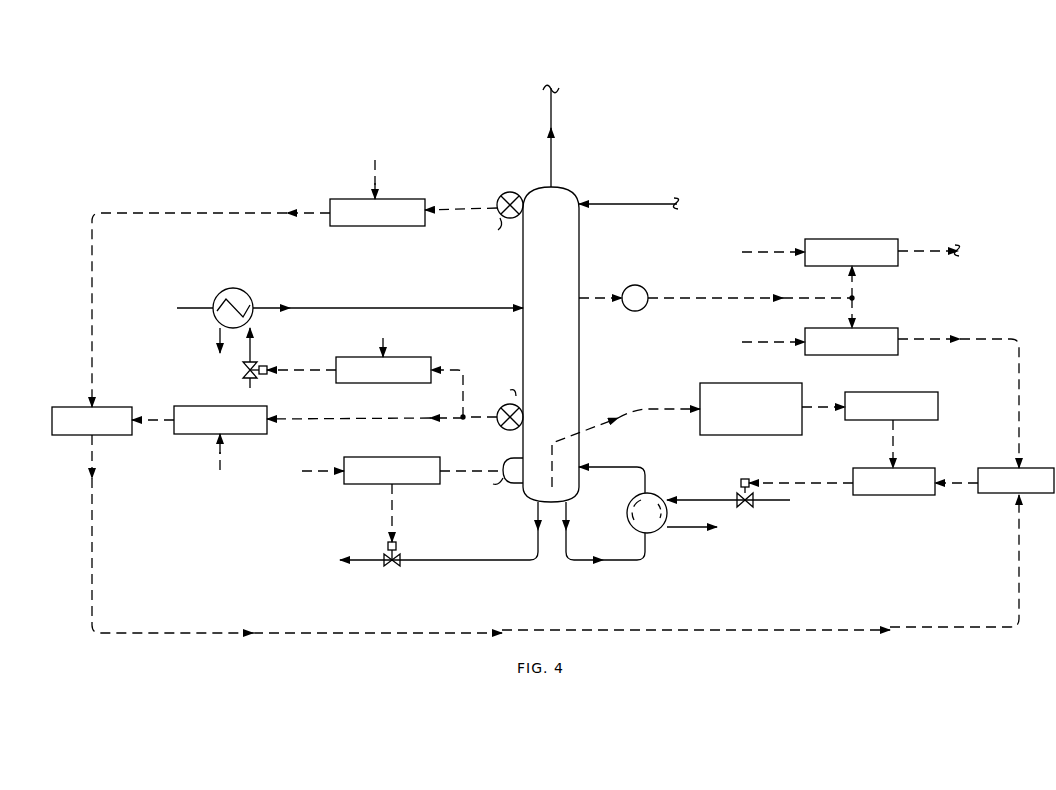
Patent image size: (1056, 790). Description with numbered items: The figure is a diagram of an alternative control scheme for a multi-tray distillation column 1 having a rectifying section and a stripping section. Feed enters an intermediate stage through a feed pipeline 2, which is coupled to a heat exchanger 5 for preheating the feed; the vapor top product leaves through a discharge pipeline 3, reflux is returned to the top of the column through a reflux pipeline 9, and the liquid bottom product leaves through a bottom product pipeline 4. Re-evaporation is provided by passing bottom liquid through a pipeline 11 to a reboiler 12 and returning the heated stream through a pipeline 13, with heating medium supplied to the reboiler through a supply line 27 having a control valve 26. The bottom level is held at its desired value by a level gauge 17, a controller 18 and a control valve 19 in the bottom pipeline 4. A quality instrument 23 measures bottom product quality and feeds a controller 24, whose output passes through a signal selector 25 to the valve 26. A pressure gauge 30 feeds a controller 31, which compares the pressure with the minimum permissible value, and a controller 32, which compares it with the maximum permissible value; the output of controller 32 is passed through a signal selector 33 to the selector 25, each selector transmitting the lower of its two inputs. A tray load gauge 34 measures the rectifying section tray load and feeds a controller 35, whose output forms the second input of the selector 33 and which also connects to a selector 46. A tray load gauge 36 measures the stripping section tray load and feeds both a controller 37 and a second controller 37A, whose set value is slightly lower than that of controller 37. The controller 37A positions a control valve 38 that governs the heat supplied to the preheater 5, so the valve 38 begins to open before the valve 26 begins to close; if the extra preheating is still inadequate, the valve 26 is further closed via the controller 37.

The distillation column 1 is at (557, 354).
The feed pipeline 2 is at (424, 308).
The top product discharge pipeline 3 is at (552, 122).
The bottom product pipeline 4 is at (467, 560).
The heat exchanger 5 is at (220, 273).
The reflux pipeline 9 is at (613, 204).
The reboiler feed pipeline 11 is at (585, 560).
The reboiler 12 is at (636, 508).
The reboiler return pipeline 13 is at (604, 467).
The level gauge 17 is at (503, 465).
The controller 18 is at (360, 484).
The control valve 19 is at (394, 568).
The quality instrument 23 is at (752, 383).
The controller 24 is at (900, 392).
The signal selector 25 is at (907, 468).
The control valve 26 is at (745, 508).
The heating medium supply line 27 is at (684, 500).
The pressure gauge 30 is at (633, 311).
The controller 31 is at (866, 239).
The controller 32 is at (868, 328).
The signal selector 33 is at (1028, 468).
The tray load gauge 34 is at (499, 193).
The controller 35 is at (368, 226).
The tray load gauge 36 is at (500, 431).
The controller 37 is at (209, 406).
The second controller 37A is at (370, 383).
The control valve 38 is at (256, 360).
The selector 46 is at (70, 389).